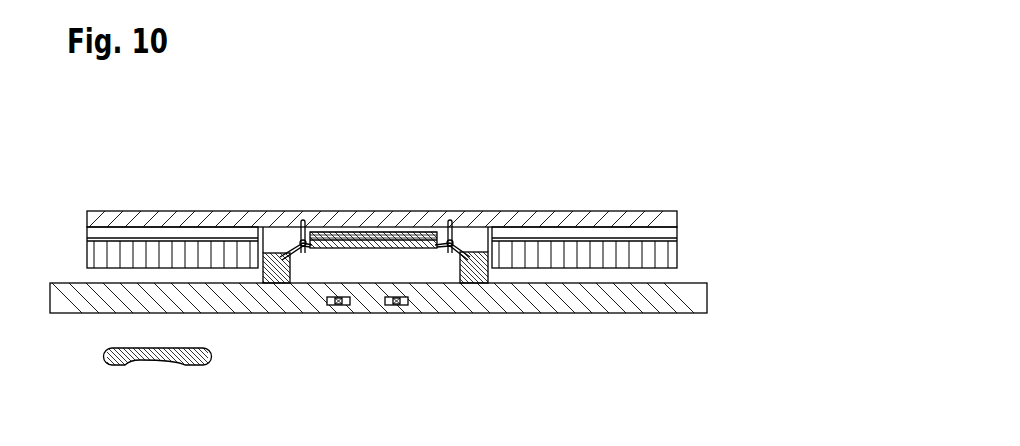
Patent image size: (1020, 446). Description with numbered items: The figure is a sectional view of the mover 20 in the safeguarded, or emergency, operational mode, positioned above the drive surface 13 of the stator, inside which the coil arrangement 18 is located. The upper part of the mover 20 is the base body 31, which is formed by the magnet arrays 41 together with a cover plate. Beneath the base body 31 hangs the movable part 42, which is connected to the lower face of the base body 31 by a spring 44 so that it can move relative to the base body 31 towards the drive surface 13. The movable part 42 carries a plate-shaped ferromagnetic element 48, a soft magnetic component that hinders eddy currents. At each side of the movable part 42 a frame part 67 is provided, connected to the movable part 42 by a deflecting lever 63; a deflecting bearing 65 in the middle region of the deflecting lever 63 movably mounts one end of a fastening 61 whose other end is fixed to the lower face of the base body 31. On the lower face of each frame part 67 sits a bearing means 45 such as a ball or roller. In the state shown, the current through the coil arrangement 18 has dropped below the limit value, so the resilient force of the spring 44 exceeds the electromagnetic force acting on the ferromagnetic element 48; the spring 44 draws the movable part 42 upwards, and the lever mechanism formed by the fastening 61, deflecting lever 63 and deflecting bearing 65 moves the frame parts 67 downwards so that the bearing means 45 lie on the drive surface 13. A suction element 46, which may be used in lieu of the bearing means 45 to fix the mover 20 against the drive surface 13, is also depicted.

The drive surface 13 is at (696, 298).
The coil arrangement 18 is at (355, 312).
The mover 20 is at (676, 192).
The base body 31 is at (613, 220).
The magnet array 41 is at (163, 248).
The movable part 42 is at (413, 262).
The spring 44 is at (402, 232).
The bearing means 45 is at (278, 280).
The suction element 46 is at (187, 363).
The ferromagnetic element 48 is at (425, 238).
The fastening 61 is at (303, 225).
The deflecting lever 63 is at (318, 238).
The deflecting bearing 65 is at (313, 250).
The frame part 67 is at (264, 240).